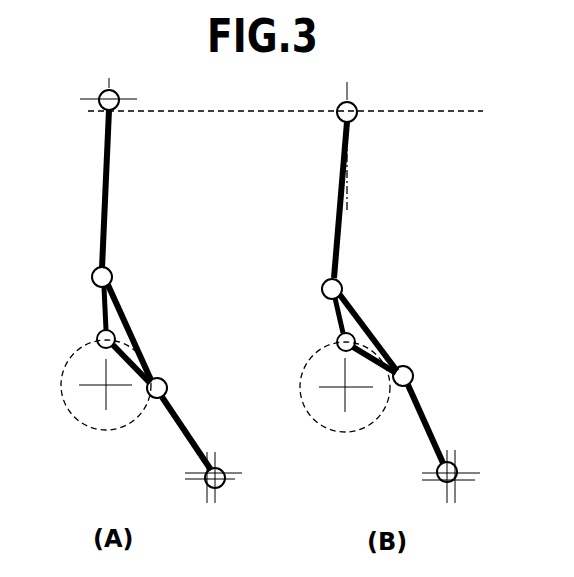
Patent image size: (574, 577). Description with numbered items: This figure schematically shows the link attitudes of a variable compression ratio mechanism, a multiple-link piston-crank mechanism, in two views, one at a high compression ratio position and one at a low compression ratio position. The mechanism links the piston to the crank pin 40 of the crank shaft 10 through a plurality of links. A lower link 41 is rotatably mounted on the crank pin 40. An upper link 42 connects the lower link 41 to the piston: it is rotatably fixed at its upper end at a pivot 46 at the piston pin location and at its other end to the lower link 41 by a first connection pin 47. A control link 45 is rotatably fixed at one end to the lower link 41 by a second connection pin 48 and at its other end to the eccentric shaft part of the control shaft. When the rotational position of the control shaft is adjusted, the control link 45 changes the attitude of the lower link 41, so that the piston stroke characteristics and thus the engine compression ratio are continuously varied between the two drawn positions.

The crank shaft 10 is at (78, 420).
The crank pin 40 is at (98, 336).
The lower link 41 is at (125, 312).
The upper link 42 is at (111, 197).
The control link 45 is at (185, 423).
The upper pivot joint 46 is at (117, 94).
The first connection pin 47 is at (112, 270).
The second connection pin 48 is at (163, 379).